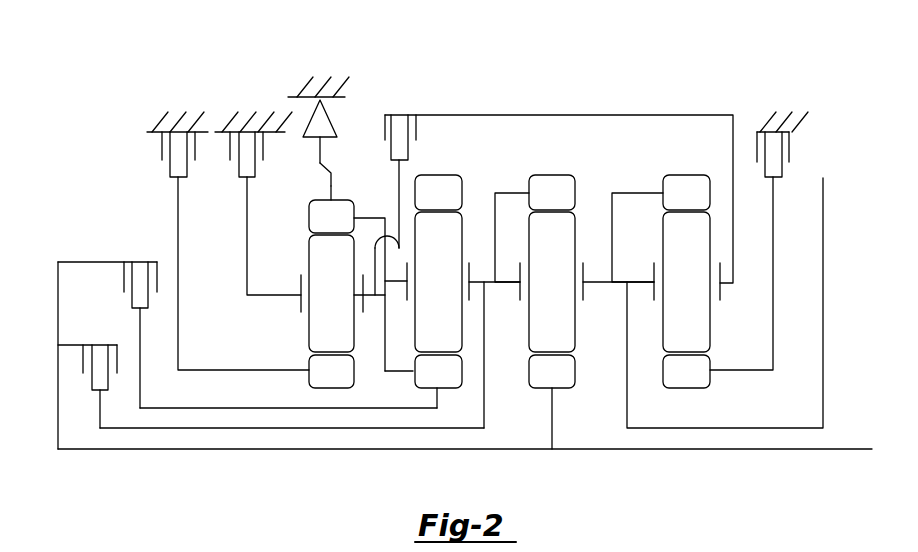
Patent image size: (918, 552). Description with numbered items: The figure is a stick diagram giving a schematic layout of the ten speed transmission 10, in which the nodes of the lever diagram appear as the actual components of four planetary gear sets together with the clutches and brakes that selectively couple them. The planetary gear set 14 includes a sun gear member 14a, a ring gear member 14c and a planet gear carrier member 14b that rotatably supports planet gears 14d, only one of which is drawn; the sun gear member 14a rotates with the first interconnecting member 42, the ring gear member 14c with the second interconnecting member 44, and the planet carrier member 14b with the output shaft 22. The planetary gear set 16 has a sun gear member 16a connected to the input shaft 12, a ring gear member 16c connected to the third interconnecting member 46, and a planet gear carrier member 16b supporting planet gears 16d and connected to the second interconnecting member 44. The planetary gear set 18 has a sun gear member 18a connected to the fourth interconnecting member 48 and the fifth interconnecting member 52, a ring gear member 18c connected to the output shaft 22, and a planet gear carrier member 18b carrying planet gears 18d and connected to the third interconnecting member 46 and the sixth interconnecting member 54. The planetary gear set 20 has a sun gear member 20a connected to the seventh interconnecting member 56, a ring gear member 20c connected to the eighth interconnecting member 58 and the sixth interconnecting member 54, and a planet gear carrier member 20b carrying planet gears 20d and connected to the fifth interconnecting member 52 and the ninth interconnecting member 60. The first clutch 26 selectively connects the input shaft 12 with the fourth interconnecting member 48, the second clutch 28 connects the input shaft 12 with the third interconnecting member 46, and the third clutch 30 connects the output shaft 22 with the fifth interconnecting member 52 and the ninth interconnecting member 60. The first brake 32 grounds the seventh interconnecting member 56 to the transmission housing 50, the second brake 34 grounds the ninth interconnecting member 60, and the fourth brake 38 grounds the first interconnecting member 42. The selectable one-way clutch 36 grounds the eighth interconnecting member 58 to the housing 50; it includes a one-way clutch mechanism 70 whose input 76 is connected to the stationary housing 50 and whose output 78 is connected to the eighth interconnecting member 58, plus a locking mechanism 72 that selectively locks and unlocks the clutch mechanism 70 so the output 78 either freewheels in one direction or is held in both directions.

The ten speed transmission 10 is at (628, 96).
The input shaft 12 is at (805, 450).
The planetary gear set 14 is at (690, 257).
The sun gear member 14a is at (686, 371).
The planet gear carrier member 14b is at (652, 273).
The ring gear member 14c is at (686, 192).
The planet gears 14d is at (686, 282).
The planetary gear set 16 is at (587, 287).
The sun gear member 16a is at (552, 402).
The planet gear carrier member 16b is at (587, 292).
The ring gear member 16c is at (552, 192).
The planet gears 16d is at (552, 282).
The planetary gear set 18 is at (455, 277).
The sun gear member 18a is at (438, 371).
The planet gear carrier member 18b is at (406, 298).
The ring gear member 18c is at (438, 192).
The planet gears 18d is at (438, 282).
The planetary gear set 20 is at (318, 289).
The sun gear member 20a is at (331, 371).
The planet gear carrier member 20b is at (290, 310).
The ring gear member 20c is at (331, 216).
The planet gears 20d is at (331, 293).
The output shaft 22 is at (573, 115).
The first clutch 26 is at (124, 275).
The second clutch 28 is at (83, 358).
The third clutch 30 is at (382, 114).
The first brake 32 is at (162, 146).
The second brake 34 is at (230, 150).
The selectable one-way clutch 36 is at (358, 107).
The fourth brake 38 is at (790, 147).
The first shaft or interconnecting member 42 is at (775, 335).
The second shaft or interconnecting member 44 is at (637, 193).
The third shaft or interconnecting member 46 is at (496, 263).
The fourth shaft or interconnecting member 48 is at (200, 408).
The transmission housing 50 is at (242, 124).
The fifth shaft or interconnecting member 52 is at (398, 372).
The sixth shaft or interconnecting member 54 is at (364, 217).
The seventh shaft or interconnecting member 56 is at (180, 318).
The eighth shaft or interconnecting member 58 is at (330, 190).
The ninth shaft or interconnecting member 60 is at (247, 262).
The one-way clutch mechanism 70 is at (333, 122).
The locking mechanism 72 is at (330, 165).
The input 76 is at (288, 100).
The output 78 is at (318, 148).